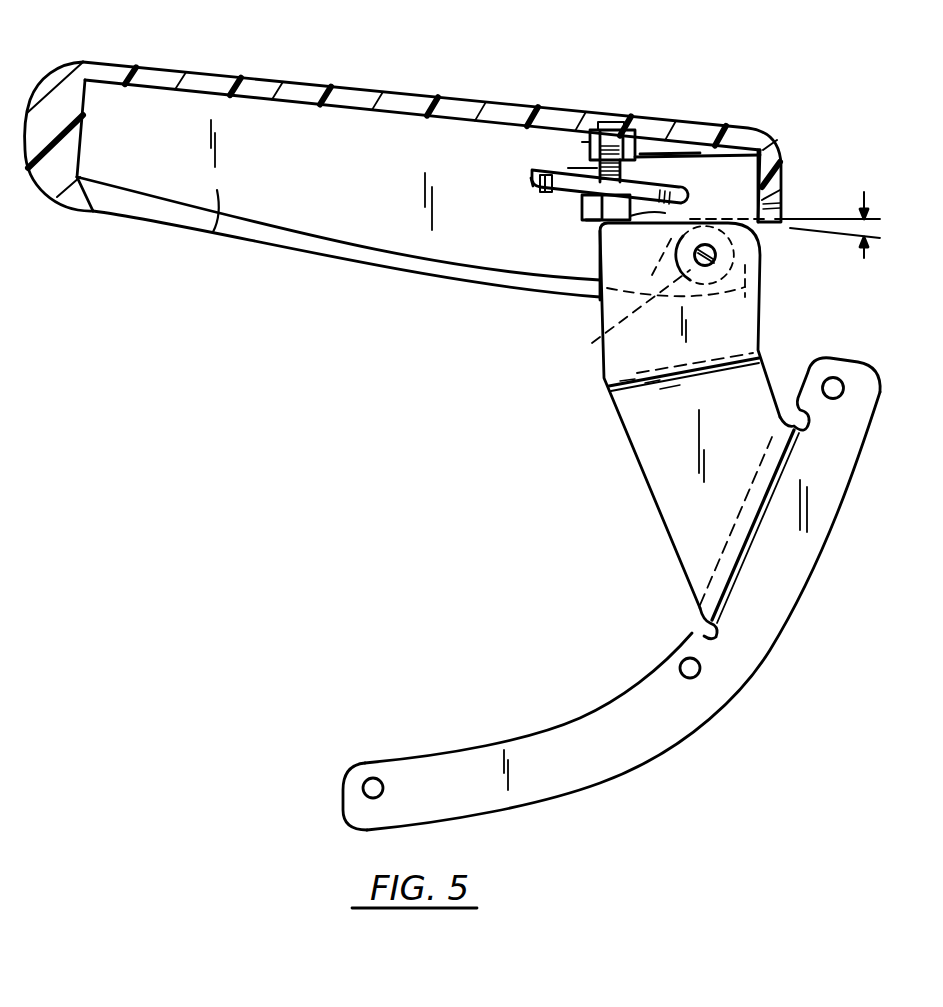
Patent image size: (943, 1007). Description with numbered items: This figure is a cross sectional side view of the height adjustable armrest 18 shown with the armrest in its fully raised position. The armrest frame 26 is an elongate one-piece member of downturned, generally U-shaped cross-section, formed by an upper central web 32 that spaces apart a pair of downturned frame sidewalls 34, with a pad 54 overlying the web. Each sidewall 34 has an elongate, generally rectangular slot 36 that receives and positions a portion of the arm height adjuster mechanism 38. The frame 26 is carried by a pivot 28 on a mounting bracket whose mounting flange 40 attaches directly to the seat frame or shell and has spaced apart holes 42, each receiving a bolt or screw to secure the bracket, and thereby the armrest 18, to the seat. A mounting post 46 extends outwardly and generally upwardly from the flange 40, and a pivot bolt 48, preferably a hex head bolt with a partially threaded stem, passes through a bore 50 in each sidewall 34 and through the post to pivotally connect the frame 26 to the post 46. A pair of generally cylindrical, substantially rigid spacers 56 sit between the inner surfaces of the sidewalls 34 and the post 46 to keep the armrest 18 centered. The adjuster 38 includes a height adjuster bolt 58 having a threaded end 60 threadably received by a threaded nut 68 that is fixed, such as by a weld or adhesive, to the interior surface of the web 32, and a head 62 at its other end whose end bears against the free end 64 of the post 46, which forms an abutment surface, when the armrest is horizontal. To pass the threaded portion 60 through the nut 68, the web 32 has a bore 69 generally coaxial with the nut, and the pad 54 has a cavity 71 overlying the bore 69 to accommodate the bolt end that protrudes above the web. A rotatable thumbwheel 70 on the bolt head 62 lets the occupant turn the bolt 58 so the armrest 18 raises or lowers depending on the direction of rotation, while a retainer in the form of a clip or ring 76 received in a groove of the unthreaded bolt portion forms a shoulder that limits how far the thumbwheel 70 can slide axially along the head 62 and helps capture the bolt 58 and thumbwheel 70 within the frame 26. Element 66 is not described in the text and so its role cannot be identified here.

The height adjustable armrest 18 is at (114, 233).
The armrest frame 26 is at (193, 77).
The upper central web 32 is at (250, 80).
The pad 54 is at (313, 82).
The frame sidewall 34 is at (213, 232).
The threaded end of height adjuster bolt 60 is at (612, 143).
The cavity 71 is at (603, 125).
The bore 69 is at (632, 133).
The threaded nut 68 is at (582, 148).
The slot 36 is at (530, 172).
The thumbwheel 70 is at (533, 183).
The bolt head 62 is at (583, 210).
The arm height adjuster mechanism 38 is at (538, 210).
The height adjuster bolt 58 is at (588, 229).
The retainer plate 66 is at (632, 175).
The clip or ring 76 is at (642, 150).
The free end of mounting post 64 is at (665, 213).
The mounting post 46 is at (697, 443).
The pivot 28 is at (738, 276).
The pivot bolt 48 is at (713, 260).
The spacer 56 is at (727, 250).
The bore 50 is at (592, 343).
The mounting flange 40 is at (512, 782).
The holes 42 is at (834, 380).